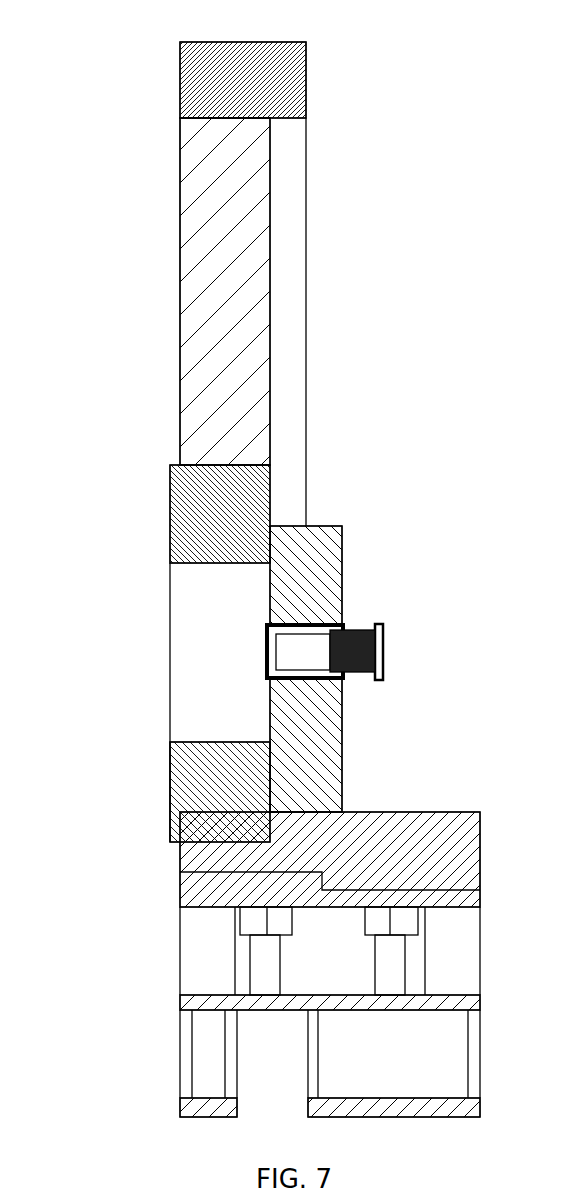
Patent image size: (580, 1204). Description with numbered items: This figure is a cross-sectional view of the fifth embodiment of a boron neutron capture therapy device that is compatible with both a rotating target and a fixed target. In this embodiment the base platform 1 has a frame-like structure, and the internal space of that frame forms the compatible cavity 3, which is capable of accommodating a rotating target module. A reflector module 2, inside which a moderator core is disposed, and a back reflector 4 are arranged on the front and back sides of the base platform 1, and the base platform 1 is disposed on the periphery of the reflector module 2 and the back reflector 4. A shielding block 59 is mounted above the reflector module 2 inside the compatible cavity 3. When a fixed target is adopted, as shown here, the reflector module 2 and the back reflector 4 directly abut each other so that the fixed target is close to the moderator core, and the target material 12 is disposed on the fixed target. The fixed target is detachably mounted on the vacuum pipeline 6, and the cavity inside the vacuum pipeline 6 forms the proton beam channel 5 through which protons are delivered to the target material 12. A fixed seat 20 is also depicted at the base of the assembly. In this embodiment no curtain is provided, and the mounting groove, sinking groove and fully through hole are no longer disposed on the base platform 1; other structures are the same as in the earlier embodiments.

The base platform 1 is at (306, 88).
The reflector module 2 is at (213, 793).
The compatible cavity 3 is at (278, 297).
The back reflector 4 is at (310, 760).
The proton beam channel 5 is at (338, 611).
The vacuum pipeline 6 is at (383, 650).
The target material 12 is at (265, 651).
The fixed seat 20 is at (180, 1100).
The shielding block 59 is at (199, 350).